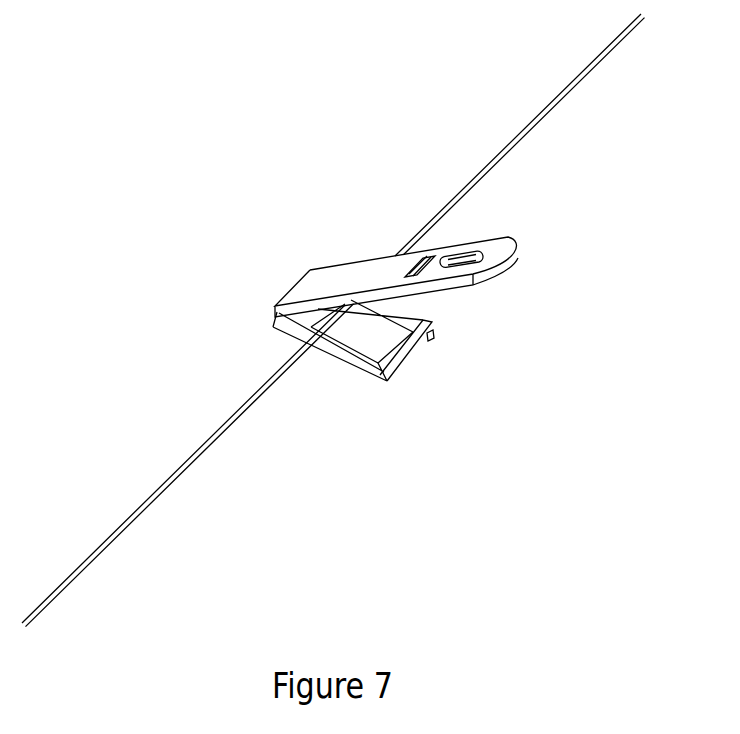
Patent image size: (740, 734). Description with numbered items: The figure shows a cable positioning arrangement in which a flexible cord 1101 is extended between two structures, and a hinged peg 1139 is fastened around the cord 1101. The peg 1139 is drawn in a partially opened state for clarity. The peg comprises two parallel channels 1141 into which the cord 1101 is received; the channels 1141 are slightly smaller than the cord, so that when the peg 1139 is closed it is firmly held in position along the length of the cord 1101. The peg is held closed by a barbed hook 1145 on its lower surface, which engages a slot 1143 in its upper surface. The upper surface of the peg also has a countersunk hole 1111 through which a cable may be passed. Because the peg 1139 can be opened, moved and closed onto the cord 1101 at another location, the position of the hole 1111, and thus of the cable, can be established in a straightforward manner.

The flexible cord 1101 is at (131, 499).
The countersunk hole 1111 is at (476, 253).
The hinged peg 1139 is at (452, 168).
The parallel channels 1141 is at (477, 411).
The slot 1143 is at (418, 239).
The barbed hook 1145 is at (435, 353).